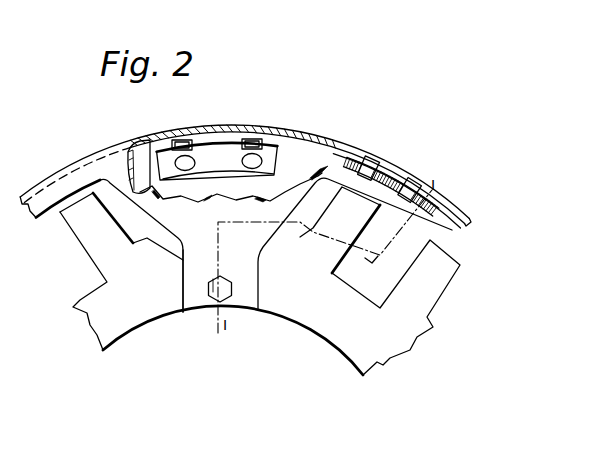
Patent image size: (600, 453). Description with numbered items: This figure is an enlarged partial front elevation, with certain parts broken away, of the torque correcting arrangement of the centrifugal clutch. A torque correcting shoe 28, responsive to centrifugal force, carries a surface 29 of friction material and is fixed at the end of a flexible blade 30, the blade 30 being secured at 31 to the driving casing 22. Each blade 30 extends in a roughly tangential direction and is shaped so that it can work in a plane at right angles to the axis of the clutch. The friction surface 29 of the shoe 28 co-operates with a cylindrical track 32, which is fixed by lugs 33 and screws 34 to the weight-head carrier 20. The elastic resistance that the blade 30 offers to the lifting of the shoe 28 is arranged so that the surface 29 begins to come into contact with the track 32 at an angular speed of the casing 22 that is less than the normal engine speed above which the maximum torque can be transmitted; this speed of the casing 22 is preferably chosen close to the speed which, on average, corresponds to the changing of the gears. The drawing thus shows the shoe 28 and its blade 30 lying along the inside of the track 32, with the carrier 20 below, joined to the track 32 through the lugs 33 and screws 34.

The weight-head carrier 20 is at (358, 342).
The driving casing 22 is at (141, 162).
The torque correcting shoe 28 is at (448, 204).
The surface of friction material 29 is at (400, 191).
The flexible blade 30 is at (294, 150).
The securing point of blade 31 is at (245, 160).
The cylindrical track 32 is at (347, 151).
The lug 33 is at (183, 284).
The screw 34 is at (212, 296).